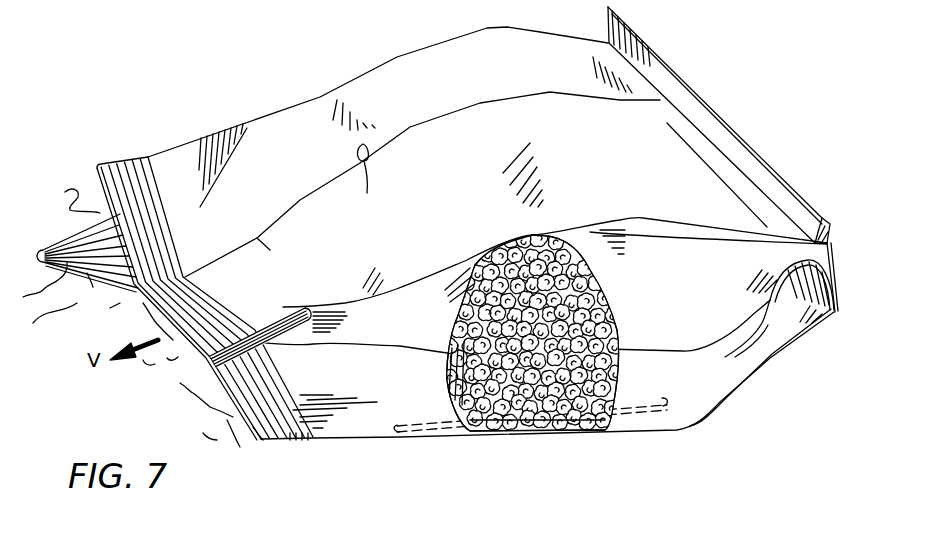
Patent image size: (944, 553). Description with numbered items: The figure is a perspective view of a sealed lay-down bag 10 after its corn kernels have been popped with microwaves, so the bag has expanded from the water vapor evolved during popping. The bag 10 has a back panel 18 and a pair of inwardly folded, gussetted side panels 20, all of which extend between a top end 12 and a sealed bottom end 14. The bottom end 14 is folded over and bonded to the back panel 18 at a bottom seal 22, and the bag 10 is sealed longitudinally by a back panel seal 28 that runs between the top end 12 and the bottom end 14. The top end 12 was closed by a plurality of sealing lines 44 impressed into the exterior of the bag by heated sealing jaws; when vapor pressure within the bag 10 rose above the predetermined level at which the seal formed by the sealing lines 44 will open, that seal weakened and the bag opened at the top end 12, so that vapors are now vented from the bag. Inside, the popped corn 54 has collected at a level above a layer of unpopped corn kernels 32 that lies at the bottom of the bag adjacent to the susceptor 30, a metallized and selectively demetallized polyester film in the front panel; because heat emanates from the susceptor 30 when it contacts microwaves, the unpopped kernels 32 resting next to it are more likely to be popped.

The lay-down bag 10 is at (305, 98).
The top end 12 is at (42, 258).
The bottom end 14 is at (770, 173).
The back panel 18 is at (452, 172).
The gussetted side panels 20 is at (343, 421).
The bottom seal 22 is at (828, 247).
The back panel seal 28 is at (363, 180).
The susceptor 30 is at (650, 413).
The unpopped corn kernels 32 is at (563, 423).
The sealing lines 44 is at (287, 441).
The popped corn 54 is at (520, 428).